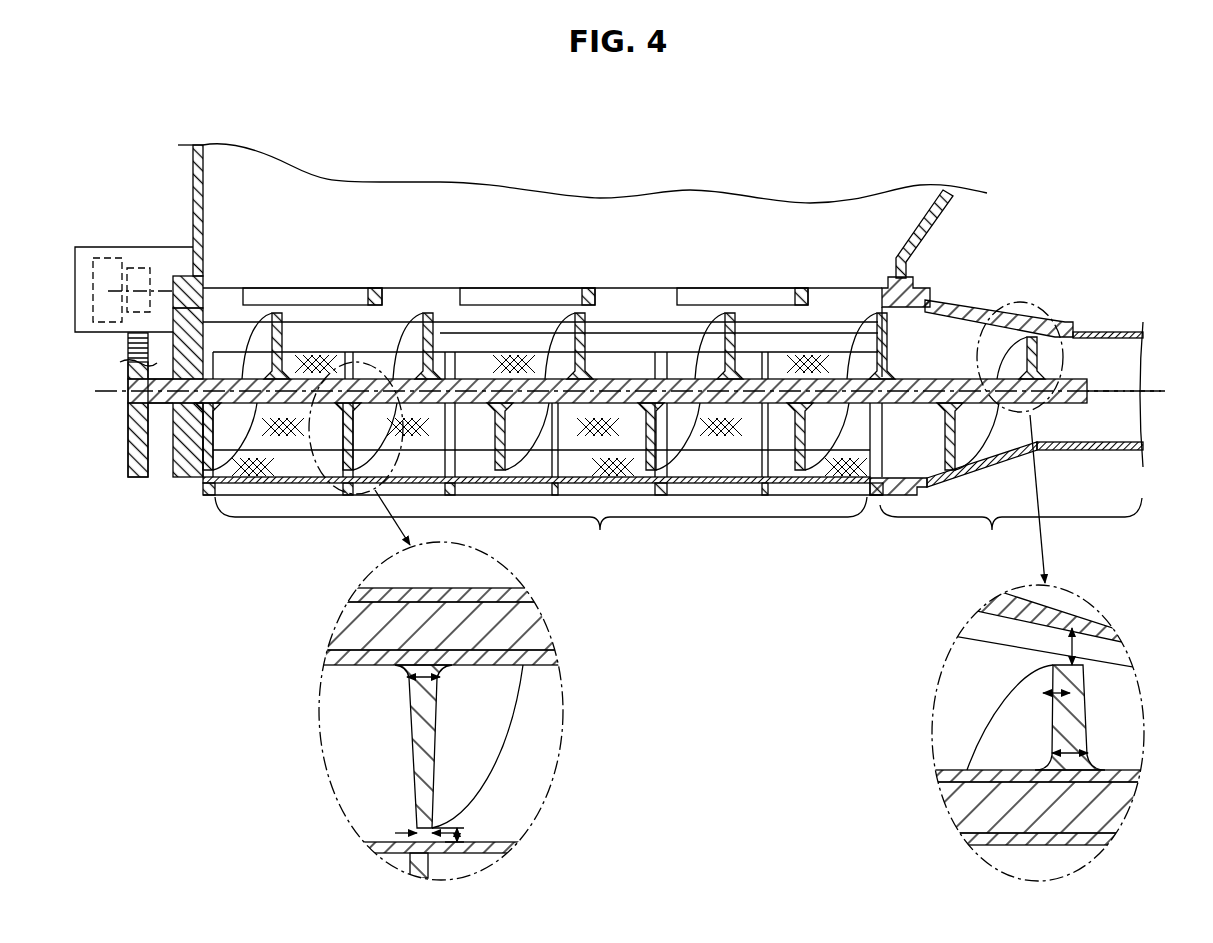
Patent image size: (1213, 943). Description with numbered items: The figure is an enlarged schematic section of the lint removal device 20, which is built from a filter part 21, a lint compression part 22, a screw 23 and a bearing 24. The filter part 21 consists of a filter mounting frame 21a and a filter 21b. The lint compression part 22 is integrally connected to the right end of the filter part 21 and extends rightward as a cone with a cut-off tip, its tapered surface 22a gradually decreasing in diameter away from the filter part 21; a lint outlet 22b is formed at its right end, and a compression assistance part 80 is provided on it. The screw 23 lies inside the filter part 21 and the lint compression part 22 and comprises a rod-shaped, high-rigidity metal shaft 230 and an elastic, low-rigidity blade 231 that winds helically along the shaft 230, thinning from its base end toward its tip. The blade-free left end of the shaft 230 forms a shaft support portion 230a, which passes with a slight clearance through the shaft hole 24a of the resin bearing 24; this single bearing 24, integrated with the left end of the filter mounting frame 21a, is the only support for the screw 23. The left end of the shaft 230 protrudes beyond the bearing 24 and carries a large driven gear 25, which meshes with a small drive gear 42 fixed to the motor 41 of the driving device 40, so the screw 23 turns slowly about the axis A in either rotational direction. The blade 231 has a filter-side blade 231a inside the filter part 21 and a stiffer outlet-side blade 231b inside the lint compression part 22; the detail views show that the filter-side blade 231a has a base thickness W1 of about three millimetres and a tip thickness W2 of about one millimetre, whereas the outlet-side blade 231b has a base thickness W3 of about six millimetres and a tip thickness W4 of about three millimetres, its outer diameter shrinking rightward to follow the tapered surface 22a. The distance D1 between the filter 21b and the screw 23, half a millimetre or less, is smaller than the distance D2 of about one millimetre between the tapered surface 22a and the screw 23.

The lint removal device 20 is at (710, 246).
The filter part 21 is at (543, 428).
The filter mounting frame 21a is at (290, 453).
The filter 21b is at (265, 433).
The lint compression part 22 is at (1006, 522).
The tapered surface 22a is at (990, 457).
The lint outlet 22b is at (1095, 358).
The screw 23 is at (943, 377).
The bearing 24 is at (192, 327).
The shaft hole 24a is at (215, 360).
The driven gear 25 is at (128, 435).
The driving device 40 is at (157, 253).
The motor 41 is at (103, 268).
The drive gear 42 is at (142, 277).
The compression assistance part 80 is at (985, 345).
The shaft 230 is at (480, 390).
The shaft support portion 230a is at (160, 403).
The blade 231 is at (585, 332).
The filter-side blade 231a is at (673, 427).
The outlet-side blade 231b is at (940, 433).
The axis A is at (1170, 390).
The thickness on the base end W1 is at (407, 678).
The thickness on the front end W2 is at (405, 832).
The thickness on the base end W3 is at (1086, 752).
The thickness on the front end W4 is at (1040, 690).
The distance D1 is at (462, 836).
The distance D2 is at (1075, 645).